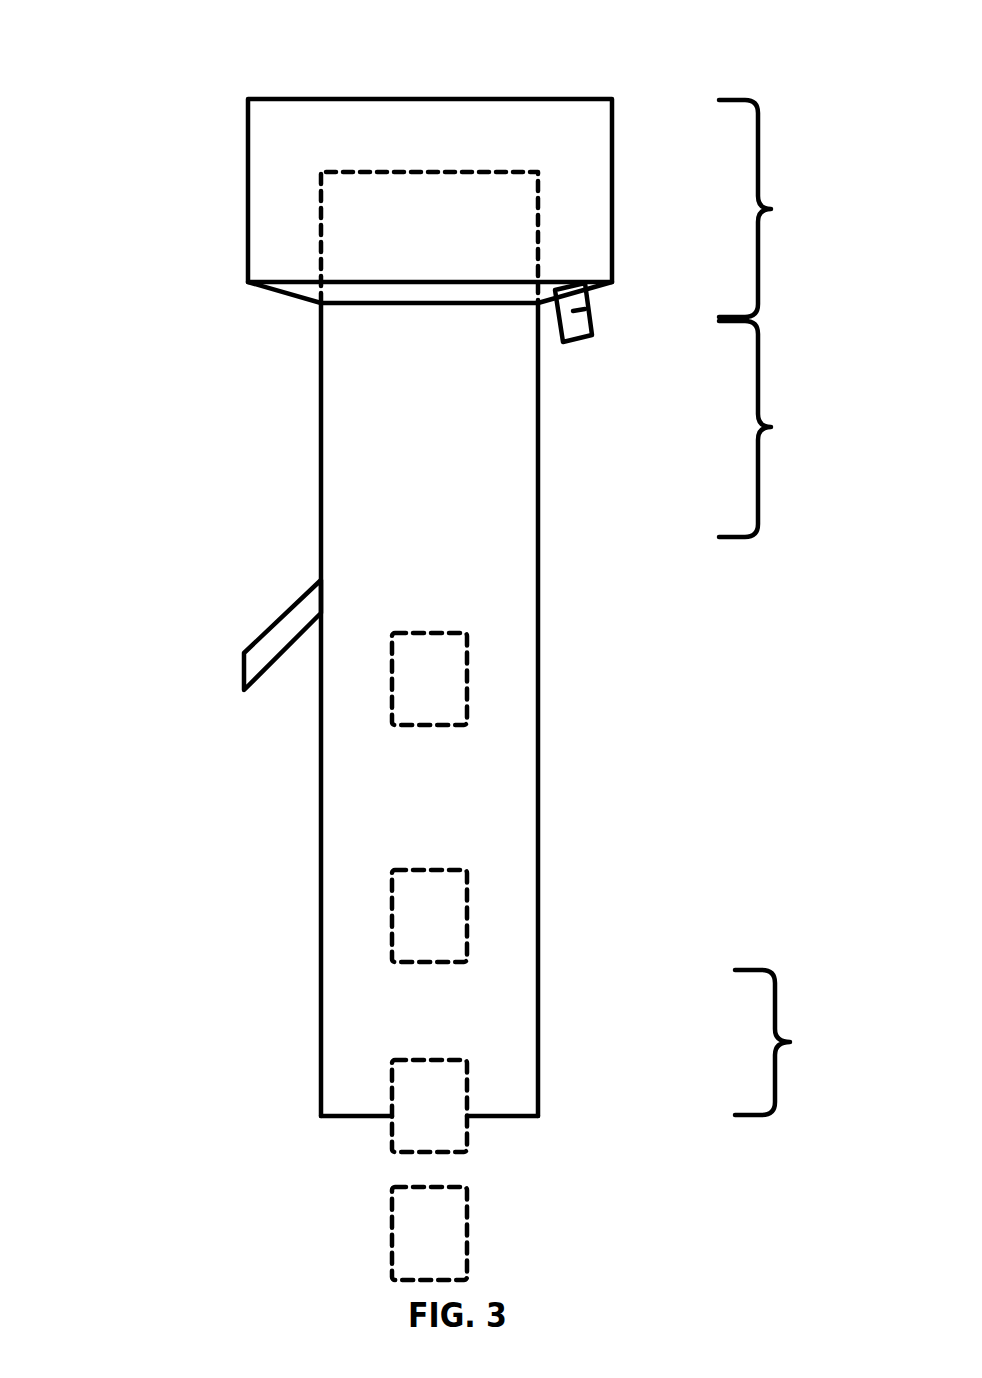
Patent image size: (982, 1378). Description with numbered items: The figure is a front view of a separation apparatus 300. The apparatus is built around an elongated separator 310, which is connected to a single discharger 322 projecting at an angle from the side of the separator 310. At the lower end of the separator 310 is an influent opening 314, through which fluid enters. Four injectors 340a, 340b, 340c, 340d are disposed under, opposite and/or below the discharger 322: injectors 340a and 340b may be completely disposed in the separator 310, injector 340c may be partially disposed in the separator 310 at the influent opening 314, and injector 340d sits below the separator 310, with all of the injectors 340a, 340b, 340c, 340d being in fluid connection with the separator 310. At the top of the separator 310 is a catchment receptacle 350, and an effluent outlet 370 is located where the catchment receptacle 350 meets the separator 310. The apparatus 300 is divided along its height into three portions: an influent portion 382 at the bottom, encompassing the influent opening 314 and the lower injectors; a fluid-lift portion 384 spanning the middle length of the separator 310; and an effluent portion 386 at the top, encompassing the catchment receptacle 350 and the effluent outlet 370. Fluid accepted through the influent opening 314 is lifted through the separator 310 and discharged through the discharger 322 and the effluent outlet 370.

The apparatus 300 is at (86, 43).
The separator 310 is at (341, 462).
The influent opening 314 is at (338, 1120).
The discharger 322 is at (284, 634).
The injector 340a is at (466, 680).
The injector 340b is at (466, 917).
The injector 340c is at (465, 1083).
The injector 340d is at (465, 1213).
The catchment receptacle 350 is at (284, 190).
The effluent outlet 370 is at (586, 313).
The influent portion 382 is at (791, 1042).
The fluid-lift portion 384 is at (773, 429).
The effluent portion 386 is at (774, 208).